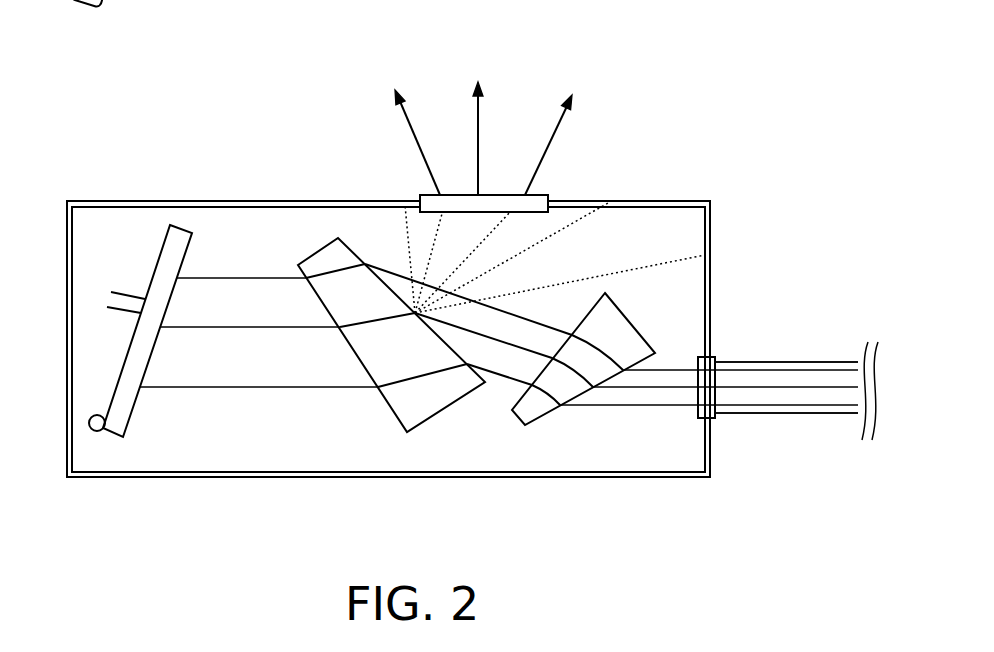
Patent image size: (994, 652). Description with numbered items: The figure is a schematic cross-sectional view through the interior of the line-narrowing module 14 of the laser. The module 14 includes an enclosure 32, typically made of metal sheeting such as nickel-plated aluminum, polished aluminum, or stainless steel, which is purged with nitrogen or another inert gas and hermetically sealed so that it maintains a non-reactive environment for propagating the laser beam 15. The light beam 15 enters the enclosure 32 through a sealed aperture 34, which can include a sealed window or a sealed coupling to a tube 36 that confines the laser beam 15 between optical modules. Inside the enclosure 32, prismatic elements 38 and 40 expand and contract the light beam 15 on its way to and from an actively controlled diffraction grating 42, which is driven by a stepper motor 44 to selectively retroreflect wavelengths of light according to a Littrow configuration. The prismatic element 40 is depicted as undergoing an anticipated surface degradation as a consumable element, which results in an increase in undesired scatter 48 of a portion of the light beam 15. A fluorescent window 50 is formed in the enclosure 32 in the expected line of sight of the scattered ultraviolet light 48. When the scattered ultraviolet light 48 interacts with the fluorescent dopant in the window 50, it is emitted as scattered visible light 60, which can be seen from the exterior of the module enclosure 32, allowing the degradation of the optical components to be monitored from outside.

The line-narrowing module 14 is at (179, 200).
The laser beam 15 is at (817, 367).
The enclosure 32 is at (205, 478).
The sealed aperture 34 is at (714, 372).
The tube 36 is at (768, 412).
The prismatic element 38 is at (527, 422).
The prismatic element 40 is at (387, 406).
The diffraction grating 42 is at (187, 258).
The stepper motor 44 is at (102, 275).
The scattered ultraviolet light 48 is at (450, 232).
The fluorescent window 50 is at (548, 200).
The scattered visible light 60 is at (495, 132).